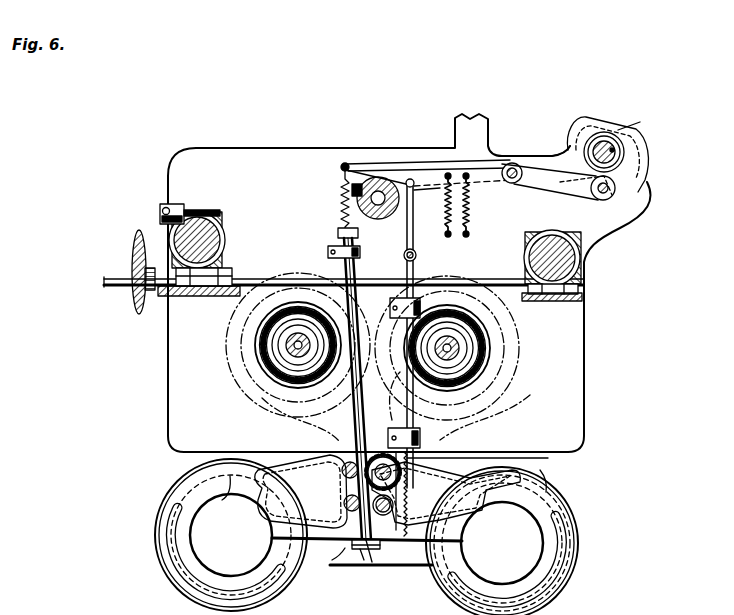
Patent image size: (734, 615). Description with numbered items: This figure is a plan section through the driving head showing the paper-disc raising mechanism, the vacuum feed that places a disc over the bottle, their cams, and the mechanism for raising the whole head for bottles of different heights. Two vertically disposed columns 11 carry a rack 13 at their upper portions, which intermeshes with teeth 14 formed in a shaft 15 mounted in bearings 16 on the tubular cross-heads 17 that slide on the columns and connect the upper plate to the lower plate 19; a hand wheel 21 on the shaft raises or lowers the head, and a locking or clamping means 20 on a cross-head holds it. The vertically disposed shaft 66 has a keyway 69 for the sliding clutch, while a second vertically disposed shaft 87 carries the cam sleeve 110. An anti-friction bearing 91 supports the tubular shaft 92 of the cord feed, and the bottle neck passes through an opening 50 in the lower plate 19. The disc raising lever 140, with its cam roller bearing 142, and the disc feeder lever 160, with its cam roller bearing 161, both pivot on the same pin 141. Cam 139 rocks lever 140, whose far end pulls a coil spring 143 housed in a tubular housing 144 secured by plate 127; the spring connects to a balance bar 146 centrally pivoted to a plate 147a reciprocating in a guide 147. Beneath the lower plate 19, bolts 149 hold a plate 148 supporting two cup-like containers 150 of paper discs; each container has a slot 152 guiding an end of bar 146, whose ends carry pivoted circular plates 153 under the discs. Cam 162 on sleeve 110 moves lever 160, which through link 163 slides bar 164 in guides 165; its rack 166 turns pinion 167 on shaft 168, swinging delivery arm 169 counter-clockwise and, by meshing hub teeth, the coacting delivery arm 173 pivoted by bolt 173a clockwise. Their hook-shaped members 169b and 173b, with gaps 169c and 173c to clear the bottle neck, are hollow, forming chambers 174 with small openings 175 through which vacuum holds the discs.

The column 11 is at (160, 230).
The rack 13 is at (220, 252).
The teeth 14 is at (186, 296).
The shaft 15 is at (370, 274).
The bearing 16 is at (208, 290).
The tubular cross-head 17 is at (214, 238).
The lower plate 19 is at (584, 352).
The locking or clamping means 20 is at (160, 202).
The hand wheel 21 is at (136, 308).
The opening 50 is at (262, 337).
The vertically disposed shaft 66 is at (376, 211).
The keyway 69 is at (352, 188).
The vertically disposed shaft 87 is at (615, 150).
The anti-friction bearing 91 is at (268, 351).
The tubular shaft 92 is at (296, 351).
The cam sleeve 110 is at (608, 136).
The plate 127 is at (328, 252).
The cam 139 is at (584, 108).
The disc raising lever 140 is at (364, 166).
The pin 141 is at (512, 163).
The cam roller bearing 142 is at (570, 150).
The coil spring 143 is at (344, 204).
The tubular housing 144 is at (338, 234).
The balance bar 146 is at (352, 541).
The guide 147 is at (378, 563).
The plate 147a is at (366, 565).
The plate 148 is at (356, 567).
The bolt 149 is at (344, 557).
The cup-like container 150 is at (158, 513).
The slot 152 is at (336, 535).
The circular plate 153 is at (366, 539).
The disc feeder lever 160 is at (474, 189).
The cam roller bearing 161 is at (616, 190).
The cam 162 is at (626, 134).
The link 163 is at (411, 232).
The bar 164 is at (414, 256).
The guide 165 is at (420, 437).
The rack 166 is at (408, 479).
The pinion 167 is at (402, 467).
The vertically disposed shaft 168 is at (338, 443).
The paper disc delivery arm 169 is at (460, 491).
The hook-shaped member 169b is at (568, 547).
The gap 169c is at (494, 489).
The coacting delivery arm 173 is at (301, 491).
The bolt 173a is at (342, 467).
The hook-shaped member 173b is at (170, 527).
The gap 173c is at (242, 481).
The chamber 174 is at (574, 569).
The small opening 175 is at (180, 591).